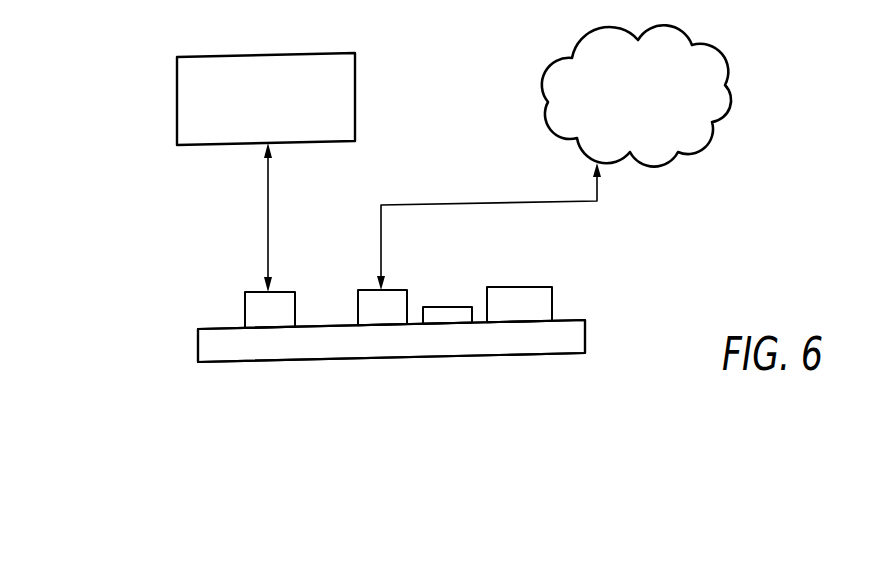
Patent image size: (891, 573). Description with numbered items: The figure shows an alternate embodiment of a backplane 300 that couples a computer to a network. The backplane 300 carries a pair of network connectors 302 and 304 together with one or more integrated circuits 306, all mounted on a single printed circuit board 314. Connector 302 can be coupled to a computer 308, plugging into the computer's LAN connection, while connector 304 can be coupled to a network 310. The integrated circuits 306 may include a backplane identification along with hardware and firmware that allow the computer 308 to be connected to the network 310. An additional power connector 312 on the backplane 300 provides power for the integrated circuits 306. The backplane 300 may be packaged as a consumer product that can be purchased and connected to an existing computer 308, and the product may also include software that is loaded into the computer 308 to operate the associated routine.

The backplane 300 is at (520, 355).
The network connector 302 is at (245, 308).
The network connector 304 is at (358, 300).
The integrated circuits 306 is at (441, 307).
The computer 308 is at (281, 122).
The network 310 is at (664, 120).
The power connector 312 is at (517, 287).
The printed circuit board 314 is at (197, 347).